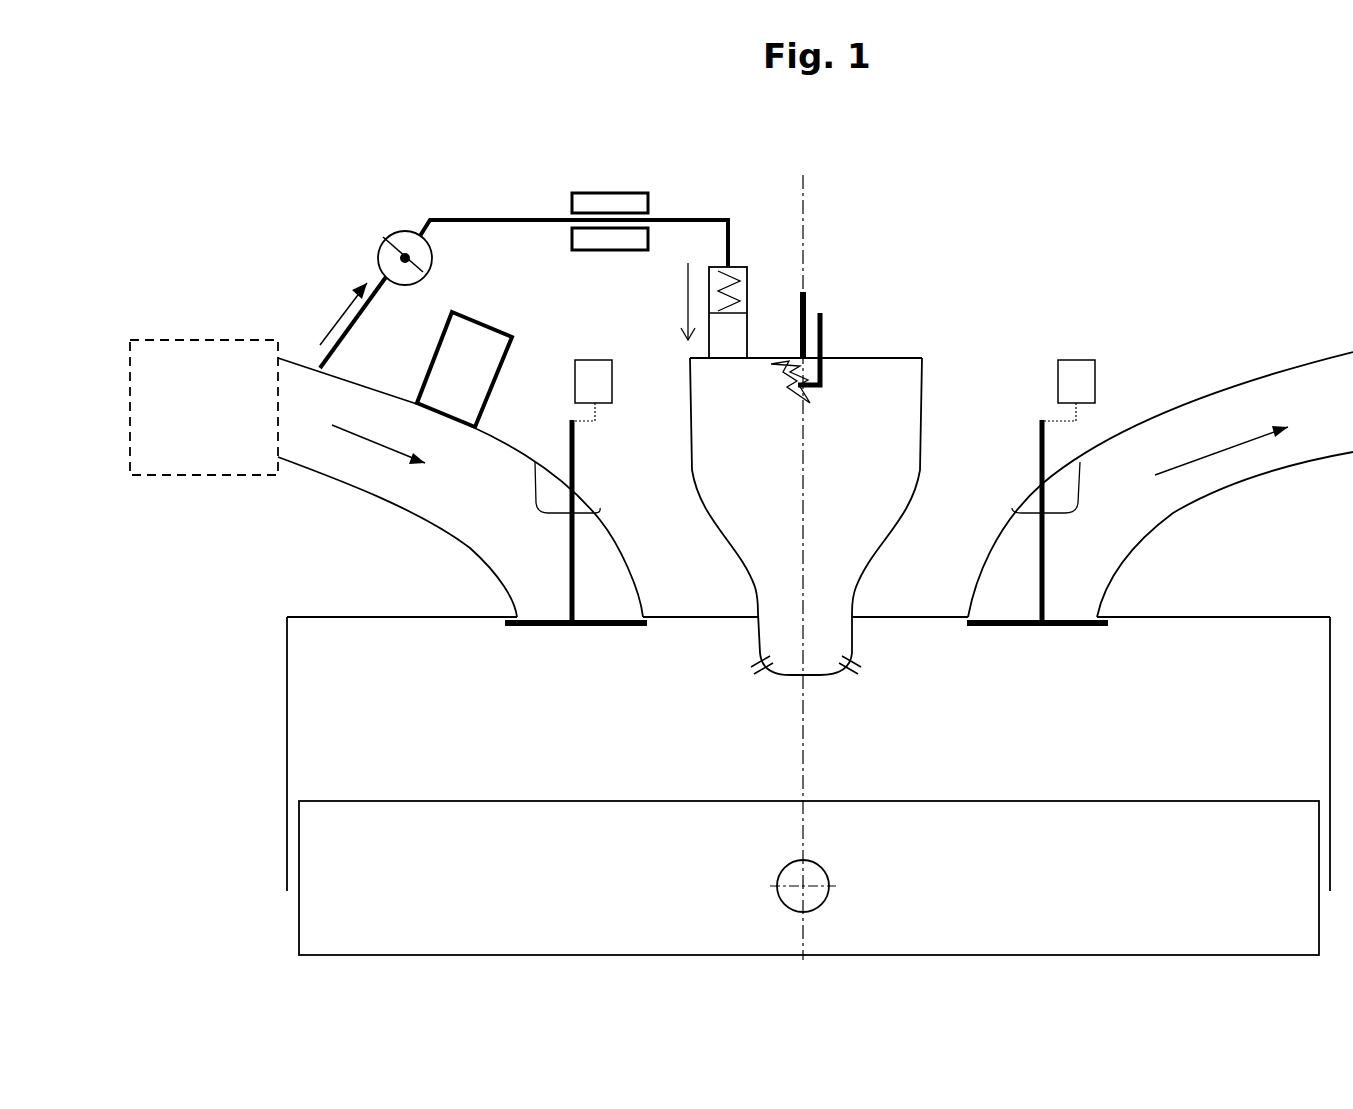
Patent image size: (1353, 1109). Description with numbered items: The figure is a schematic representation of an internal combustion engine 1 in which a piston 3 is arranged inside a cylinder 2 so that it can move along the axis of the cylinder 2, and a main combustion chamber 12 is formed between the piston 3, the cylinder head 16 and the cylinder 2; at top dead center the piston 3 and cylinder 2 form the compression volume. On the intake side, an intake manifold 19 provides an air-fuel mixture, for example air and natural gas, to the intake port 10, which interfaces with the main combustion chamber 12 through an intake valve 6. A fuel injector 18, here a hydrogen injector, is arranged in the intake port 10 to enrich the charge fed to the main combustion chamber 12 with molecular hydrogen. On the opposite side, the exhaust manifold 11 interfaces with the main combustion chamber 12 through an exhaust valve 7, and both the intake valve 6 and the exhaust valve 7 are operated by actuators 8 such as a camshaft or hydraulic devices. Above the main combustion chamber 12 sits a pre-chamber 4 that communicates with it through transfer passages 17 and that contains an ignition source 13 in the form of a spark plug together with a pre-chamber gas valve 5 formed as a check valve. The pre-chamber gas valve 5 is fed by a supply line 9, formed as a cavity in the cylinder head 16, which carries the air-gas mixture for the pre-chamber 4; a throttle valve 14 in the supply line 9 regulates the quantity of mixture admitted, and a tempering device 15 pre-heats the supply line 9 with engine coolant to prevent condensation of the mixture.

The internal combustion engine 1 is at (1137, 243).
The cylinder 2 is at (287, 683).
The piston 3 is at (457, 885).
The pre-chamber 4 is at (779, 508).
The pre-chamber gas valve 5 is at (747, 265).
The intake valve 6 is at (568, 467).
The exhaust valve 7 is at (1040, 457).
The actuators 8 is at (834, 390).
The supply line 9 is at (690, 218).
The intake port 10 is at (463, 500).
The exhaust manifold 11 is at (1303, 418).
The main combustion chamber 12 is at (340, 726).
The ignition source 13 is at (823, 342).
The throttle valve 14 is at (378, 257).
The tempering device 15 is at (572, 192).
The cylinder head 16 is at (1043, 295).
The transfer passages 17 is at (872, 667).
The fuel injector 18 is at (450, 383).
The intake manifold 19 is at (183, 425).